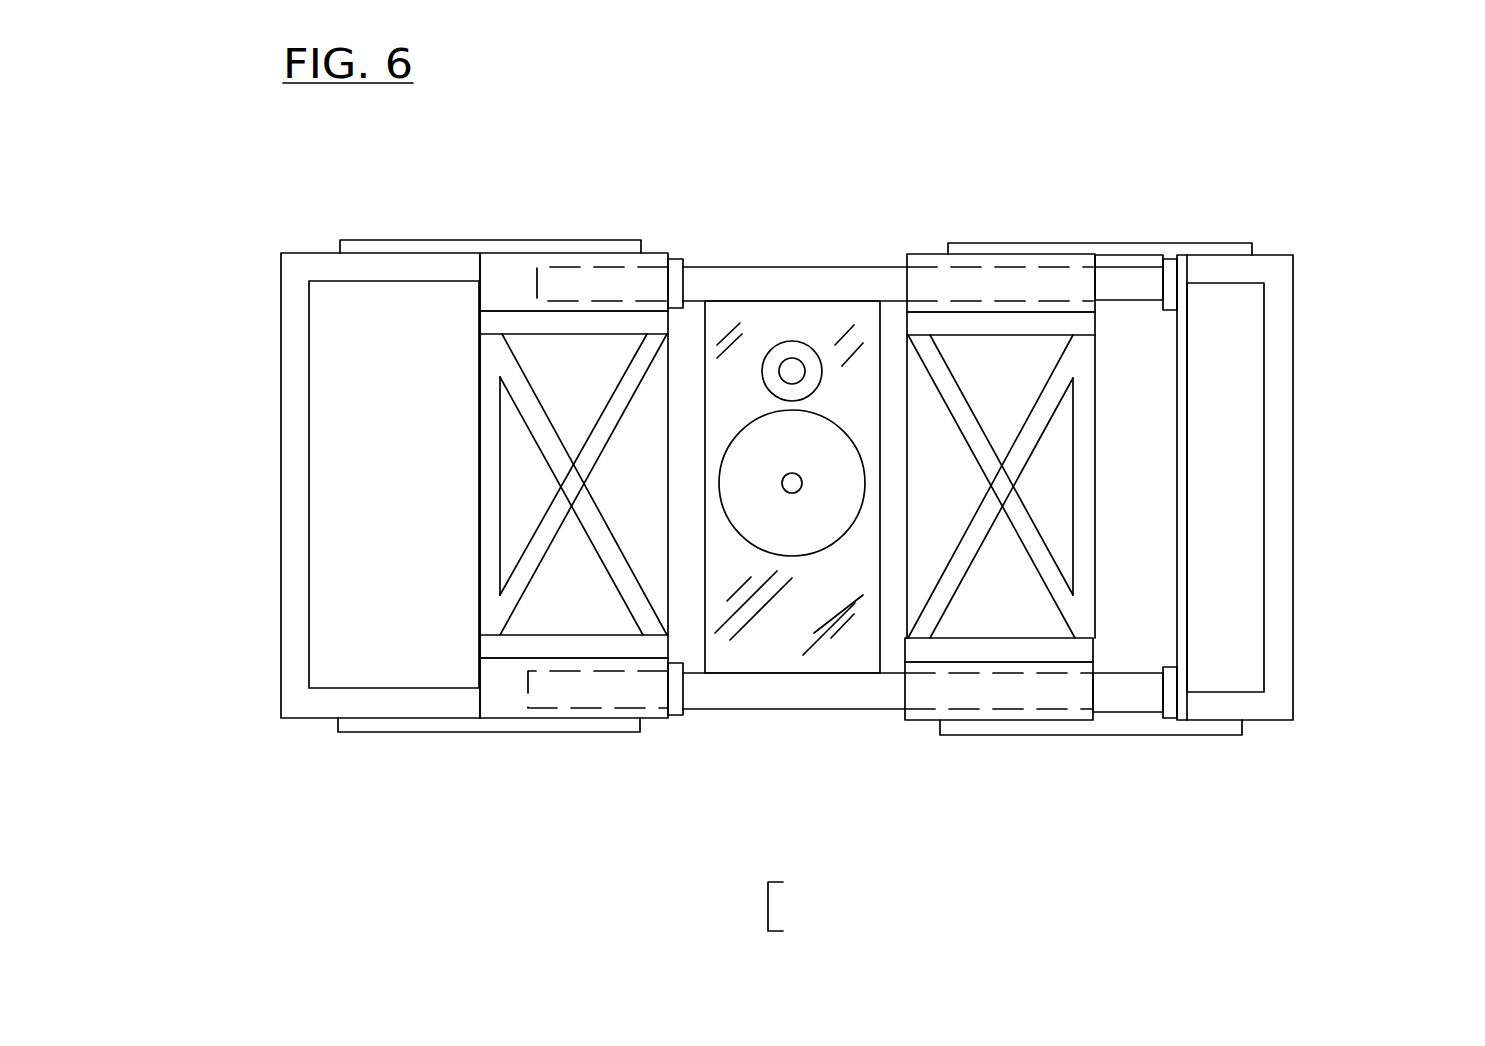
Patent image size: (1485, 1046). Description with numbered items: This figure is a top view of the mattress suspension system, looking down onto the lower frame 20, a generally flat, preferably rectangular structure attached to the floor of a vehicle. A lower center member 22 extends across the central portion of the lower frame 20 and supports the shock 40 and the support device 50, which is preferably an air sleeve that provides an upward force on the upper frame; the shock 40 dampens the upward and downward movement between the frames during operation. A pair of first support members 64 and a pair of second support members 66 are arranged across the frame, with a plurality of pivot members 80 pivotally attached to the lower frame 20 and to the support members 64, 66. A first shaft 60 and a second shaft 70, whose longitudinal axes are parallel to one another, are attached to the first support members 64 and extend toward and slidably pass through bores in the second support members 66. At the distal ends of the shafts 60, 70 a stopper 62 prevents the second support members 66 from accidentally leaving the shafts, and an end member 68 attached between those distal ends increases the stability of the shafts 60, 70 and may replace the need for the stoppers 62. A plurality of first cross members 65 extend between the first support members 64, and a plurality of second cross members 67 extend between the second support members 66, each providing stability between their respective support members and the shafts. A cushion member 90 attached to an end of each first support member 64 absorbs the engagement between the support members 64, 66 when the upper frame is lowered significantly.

The lower frame 20 is at (297, 635).
The lower center member 22 is at (811, 325).
The shock 40 is at (781, 362).
The support device 50 is at (768, 431).
The first shaft 60 is at (782, 697).
The stopper 62 is at (1183, 285).
The first support members 64 is at (517, 258).
The first cross members 65 is at (547, 435).
The second support members 66 is at (970, 262).
The second cross members 67 is at (1088, 417).
The end member 68 is at (1180, 465).
The second shaft 70 is at (1127, 278).
The pivot members 80 is at (358, 252).
The cushion member 90 is at (678, 277).